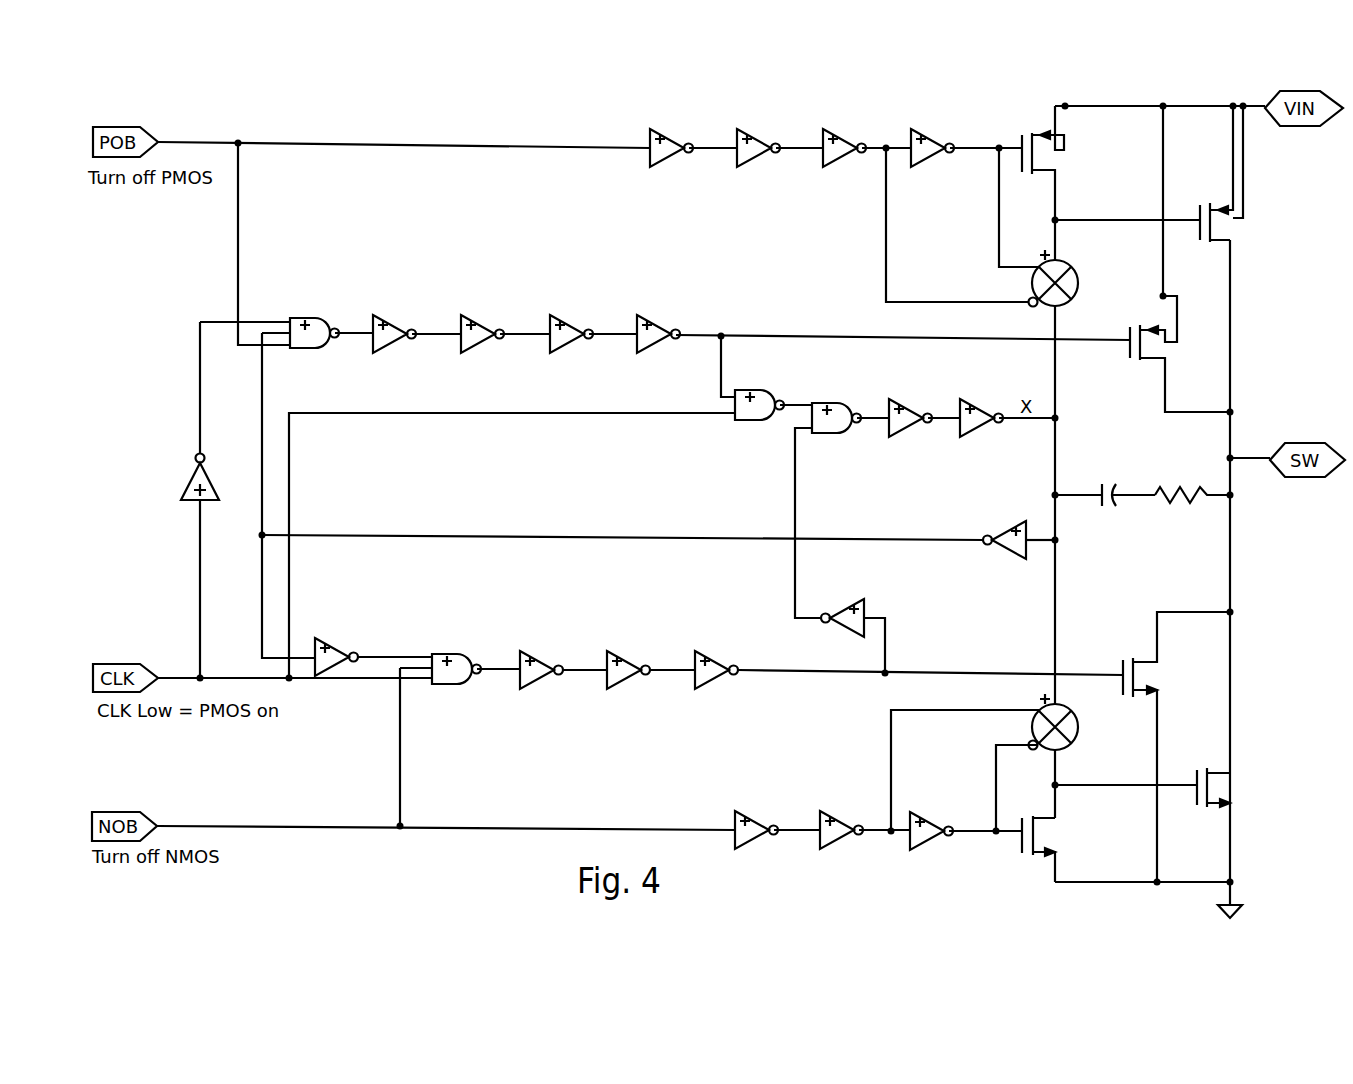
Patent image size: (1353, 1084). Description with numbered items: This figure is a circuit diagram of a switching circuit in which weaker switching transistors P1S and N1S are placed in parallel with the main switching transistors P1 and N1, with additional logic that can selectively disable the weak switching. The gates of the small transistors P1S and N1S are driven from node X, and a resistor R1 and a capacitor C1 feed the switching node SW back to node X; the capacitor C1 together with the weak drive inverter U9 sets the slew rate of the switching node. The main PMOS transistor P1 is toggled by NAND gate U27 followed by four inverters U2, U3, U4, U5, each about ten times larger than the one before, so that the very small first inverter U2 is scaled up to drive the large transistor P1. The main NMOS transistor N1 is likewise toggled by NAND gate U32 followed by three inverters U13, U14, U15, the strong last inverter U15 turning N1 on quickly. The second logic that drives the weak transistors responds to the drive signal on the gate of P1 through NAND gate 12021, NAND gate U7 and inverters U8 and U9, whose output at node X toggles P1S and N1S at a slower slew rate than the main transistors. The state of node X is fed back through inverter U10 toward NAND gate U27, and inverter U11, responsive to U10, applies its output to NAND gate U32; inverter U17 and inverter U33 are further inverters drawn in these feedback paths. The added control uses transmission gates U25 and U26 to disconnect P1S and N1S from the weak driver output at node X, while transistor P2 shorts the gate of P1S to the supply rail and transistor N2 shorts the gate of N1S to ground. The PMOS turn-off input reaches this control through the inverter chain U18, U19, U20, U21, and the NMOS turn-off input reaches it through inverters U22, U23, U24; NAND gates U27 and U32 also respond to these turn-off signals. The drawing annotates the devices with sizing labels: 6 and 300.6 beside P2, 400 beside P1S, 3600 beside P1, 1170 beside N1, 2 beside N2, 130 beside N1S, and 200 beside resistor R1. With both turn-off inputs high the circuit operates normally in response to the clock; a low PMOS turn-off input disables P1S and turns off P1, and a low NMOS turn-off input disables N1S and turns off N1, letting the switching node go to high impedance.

The inverter U18 is at (669, 159).
The inverter U19 is at (756, 159).
The inverter U20 is at (843, 159).
The inverter U21 is at (931, 159).
The NAND gate U27 is at (314, 346).
The first inverter U2 is at (390, 348).
The inverter U3 is at (479, 348).
The inverter U4 is at (566, 348).
The inverter U5 is at (655, 348).
The NAND gate 12021 is at (754, 420).
The logic gate U7 is at (836, 434).
The logic gate U8 is at (909, 432).
The weak drive inverter U9 is at (980, 432).
The inverter U10 is at (1006, 554).
The inverter U33 is at (842, 628).
The inverter U17 is at (185, 566).
The inverter U11 is at (335, 646).
The NAND gate U32 is at (456, 687).
The first inverter U13 is at (538, 684).
The inverter U14 is at (625, 684).
The inverter U15 is at (714, 684).
The inverter U22 is at (756, 843).
The inverter U23 is at (841, 843).
The inverter U24 is at (931, 843).
The TGATE U25 is at (1040, 268).
The TGATE U26 is at (1032, 722).
The transistor P2 is at (1072, 163).
The PMOS transistor P2 width 6 is at (1053, 163).
The transistor length 300.6 is at (1096, 195).
The weak PMOS switching transistor P1S is at (1209, 197).
The PMOS transistor P1S width 400 is at (1242, 174).
The main PMOS switching transistor P1 is at (1161, 354).
The PMOS transistor P1 width 3600 is at (1180, 354).
The main NMOS switching transistor N1 is at (1153, 747).
The NMOS transistor N1 width 1170 is at (1176, 747).
The transistor N2 is at (1067, 838).
The NMOS transistor N2 width 2 is at (1047, 849).
The weak NMOS switching transistor N1S is at (1189, 788).
The NMOS transistor N1S width 130 is at (1234, 800).
The capacitor C1 is at (1105, 471).
The resistor R1 is at (1192, 469).
The resistor R1 value 200 is at (1192, 469).